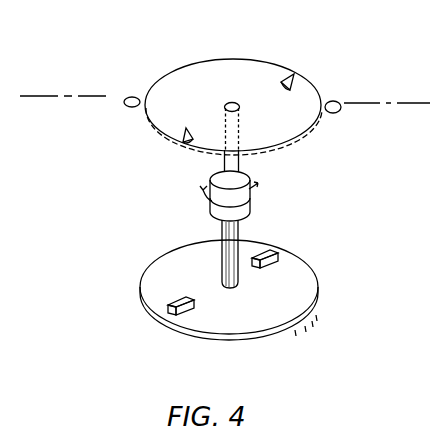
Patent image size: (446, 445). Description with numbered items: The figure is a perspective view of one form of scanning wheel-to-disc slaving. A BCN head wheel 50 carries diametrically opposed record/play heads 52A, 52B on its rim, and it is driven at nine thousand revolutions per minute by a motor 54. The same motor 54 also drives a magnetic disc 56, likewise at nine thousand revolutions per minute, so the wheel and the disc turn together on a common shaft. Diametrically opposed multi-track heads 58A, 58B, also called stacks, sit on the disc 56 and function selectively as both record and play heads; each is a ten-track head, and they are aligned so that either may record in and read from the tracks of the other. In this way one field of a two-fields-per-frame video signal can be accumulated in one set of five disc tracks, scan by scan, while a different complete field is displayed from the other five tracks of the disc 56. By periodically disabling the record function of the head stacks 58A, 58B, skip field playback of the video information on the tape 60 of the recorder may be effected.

The BCN head wheel 50 is at (246, 58).
The record/play head 52A is at (183, 142).
The record/play head 52B is at (296, 76).
The motor 54 is at (256, 192).
The magnetic disc 56 is at (267, 326).
The multi-track head 58A is at (164, 316).
The multi-track head 58B is at (280, 253).
The tape 60 is at (50, 95).